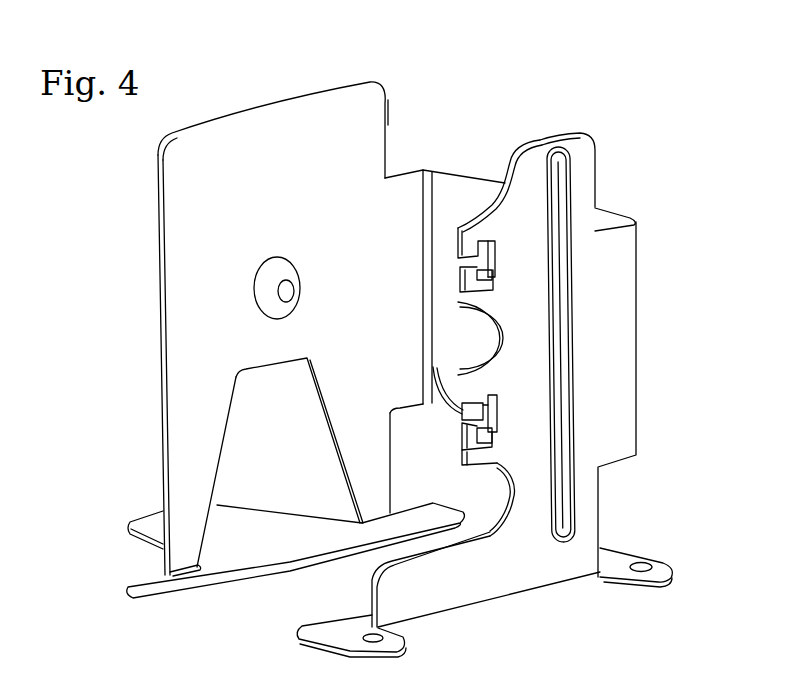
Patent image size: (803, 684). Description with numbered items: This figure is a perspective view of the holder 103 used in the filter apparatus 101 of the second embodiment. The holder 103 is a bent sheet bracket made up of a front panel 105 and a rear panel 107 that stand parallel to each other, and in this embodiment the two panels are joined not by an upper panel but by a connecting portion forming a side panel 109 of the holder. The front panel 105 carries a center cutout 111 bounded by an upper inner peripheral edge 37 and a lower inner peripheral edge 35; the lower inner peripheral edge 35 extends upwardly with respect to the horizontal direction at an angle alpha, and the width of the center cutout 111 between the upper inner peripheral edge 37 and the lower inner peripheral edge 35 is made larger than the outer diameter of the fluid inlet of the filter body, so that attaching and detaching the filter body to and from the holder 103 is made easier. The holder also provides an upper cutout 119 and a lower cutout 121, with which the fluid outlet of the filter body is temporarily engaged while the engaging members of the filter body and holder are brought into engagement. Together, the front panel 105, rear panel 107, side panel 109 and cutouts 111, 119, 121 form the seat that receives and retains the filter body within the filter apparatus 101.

The filter apparatus 101 is at (603, 78).
The holder 103 is at (638, 296).
The front panel 105 is at (588, 504).
The rear panel 107 is at (207, 183).
The side panel 109 is at (612, 212).
The center cutout 111 is at (458, 302).
The upper cutout 119 is at (491, 206).
The lower cutout 121 is at (490, 530).
The lower inner peripheral edge 35 is at (452, 382).
The upper inner peripheral edge 37 is at (497, 302).